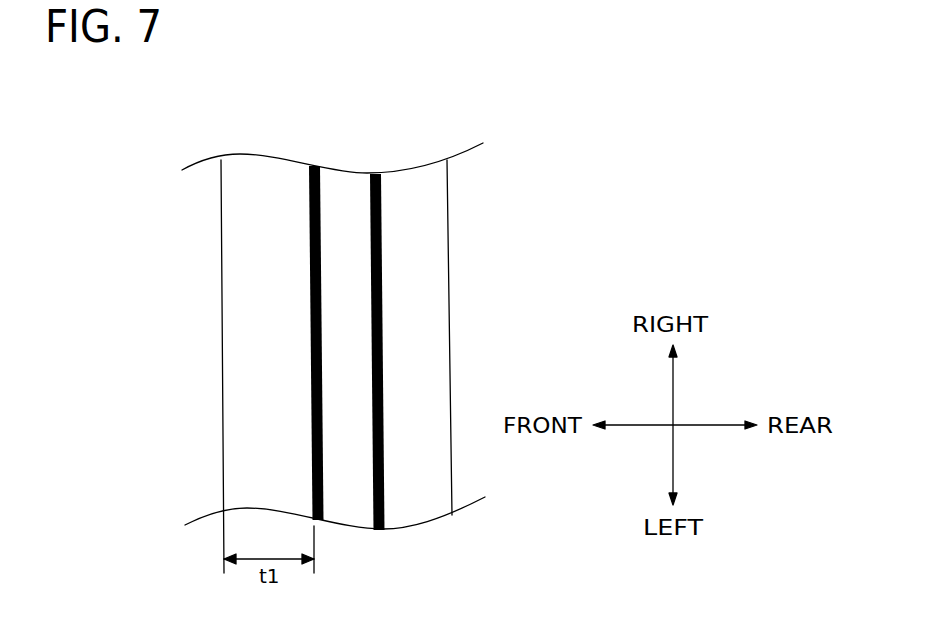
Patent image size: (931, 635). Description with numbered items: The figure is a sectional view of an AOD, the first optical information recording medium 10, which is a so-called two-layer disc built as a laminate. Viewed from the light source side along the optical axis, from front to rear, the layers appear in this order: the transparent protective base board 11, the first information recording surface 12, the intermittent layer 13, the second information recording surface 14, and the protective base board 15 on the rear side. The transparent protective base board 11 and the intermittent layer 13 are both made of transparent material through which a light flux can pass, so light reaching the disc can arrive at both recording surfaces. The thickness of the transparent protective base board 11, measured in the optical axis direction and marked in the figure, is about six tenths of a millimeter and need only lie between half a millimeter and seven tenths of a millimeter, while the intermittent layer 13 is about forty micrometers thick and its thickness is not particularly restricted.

The first optical information recording medium 10 is at (488, 115).
The transparent protective base board 11 is at (263, 171).
The first information recording surface 12 is at (315, 165).
The intermittent layer 13 is at (343, 178).
The second information recording surface 14 is at (376, 170).
The protective base board 15 is at (415, 182).